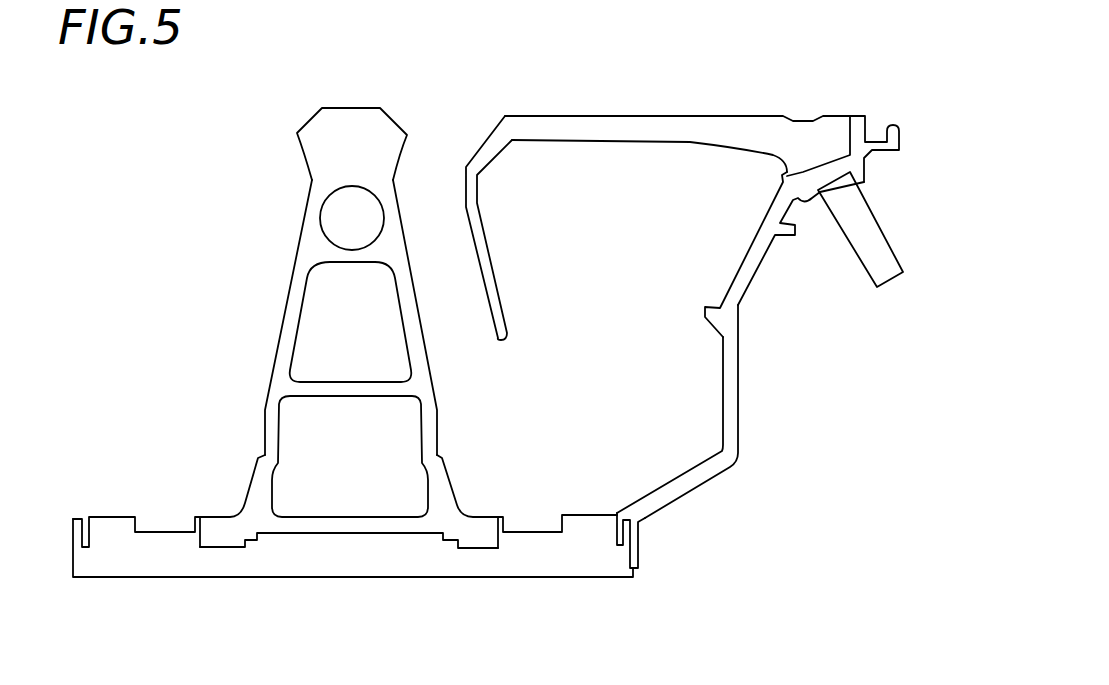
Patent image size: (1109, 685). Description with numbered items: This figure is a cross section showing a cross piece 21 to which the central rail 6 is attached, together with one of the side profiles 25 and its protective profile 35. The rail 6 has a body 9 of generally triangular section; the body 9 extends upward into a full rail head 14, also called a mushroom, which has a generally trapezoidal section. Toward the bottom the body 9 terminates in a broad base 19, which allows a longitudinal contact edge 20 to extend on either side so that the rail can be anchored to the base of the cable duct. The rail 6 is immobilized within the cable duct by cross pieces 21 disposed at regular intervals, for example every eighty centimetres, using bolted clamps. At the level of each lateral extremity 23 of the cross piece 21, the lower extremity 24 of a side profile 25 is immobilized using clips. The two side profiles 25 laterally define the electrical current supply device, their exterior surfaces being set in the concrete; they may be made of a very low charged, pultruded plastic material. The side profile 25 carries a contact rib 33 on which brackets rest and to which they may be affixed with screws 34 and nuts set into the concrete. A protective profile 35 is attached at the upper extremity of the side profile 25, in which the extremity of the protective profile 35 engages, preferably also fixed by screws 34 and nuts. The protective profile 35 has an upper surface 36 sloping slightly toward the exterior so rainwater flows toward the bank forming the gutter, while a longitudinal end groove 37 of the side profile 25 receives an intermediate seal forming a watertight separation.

The rail 6 is at (193, 225).
The rail head 14 is at (285, 110).
The rail body 9 is at (260, 330).
The broad base 19 is at (232, 493).
The longitudinal contact edge 20 is at (210, 540).
The cross piece 21 is at (128, 585).
The lateral extremity of cross piece 23 is at (585, 585).
The lower extremity of side profile 24 is at (658, 524).
The side profile 25 is at (752, 408).
The contact rib 33 is at (728, 318).
The screw 34 is at (865, 228).
The protective profile 35 is at (542, 103).
The upper surface 36 is at (635, 115).
The longitudinal end groove 37 is at (877, 112).